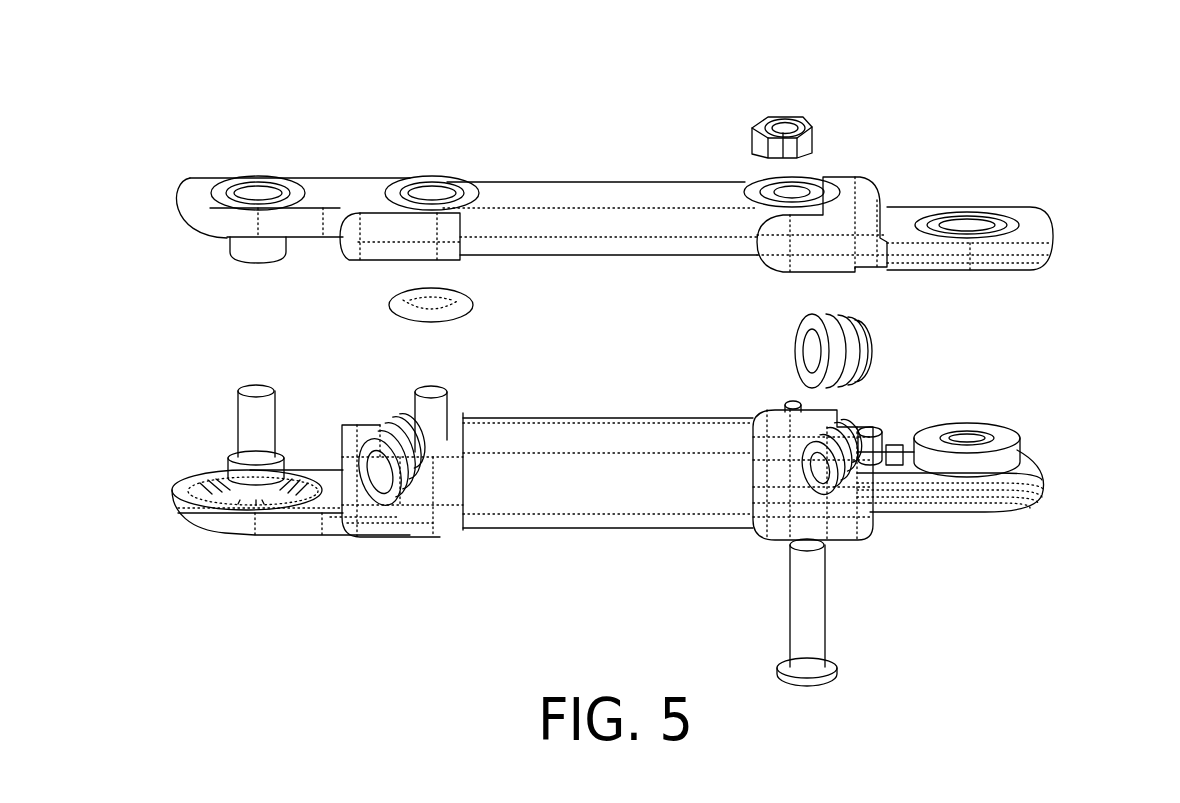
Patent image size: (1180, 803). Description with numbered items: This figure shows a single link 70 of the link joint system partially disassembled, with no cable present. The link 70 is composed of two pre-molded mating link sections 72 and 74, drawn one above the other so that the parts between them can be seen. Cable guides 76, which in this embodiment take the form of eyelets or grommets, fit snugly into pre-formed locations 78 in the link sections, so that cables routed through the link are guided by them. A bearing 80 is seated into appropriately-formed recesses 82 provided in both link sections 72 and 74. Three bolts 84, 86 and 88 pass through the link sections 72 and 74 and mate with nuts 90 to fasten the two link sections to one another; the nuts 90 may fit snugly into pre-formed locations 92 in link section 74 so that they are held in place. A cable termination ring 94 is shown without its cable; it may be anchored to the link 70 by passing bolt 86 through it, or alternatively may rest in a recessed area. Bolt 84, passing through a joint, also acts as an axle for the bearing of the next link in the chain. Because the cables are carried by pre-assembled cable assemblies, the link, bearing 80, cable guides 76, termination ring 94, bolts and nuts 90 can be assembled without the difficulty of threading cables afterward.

The link 70 is at (895, 122).
The link section 72 is at (593, 495).
The link section 74 is at (605, 225).
The cable guides 76 is at (372, 410).
The pre-formed locations 78 is at (857, 425).
The bearing 80 is at (982, 468).
The recesses 82 is at (965, 235).
The bolt 84 is at (228, 398).
The bolt 86 is at (432, 430).
The bolt 88 is at (833, 632).
The nuts 90 is at (293, 180).
The pre-formed locations 92 is at (763, 192).
The cable termination ring 94 is at (433, 323).